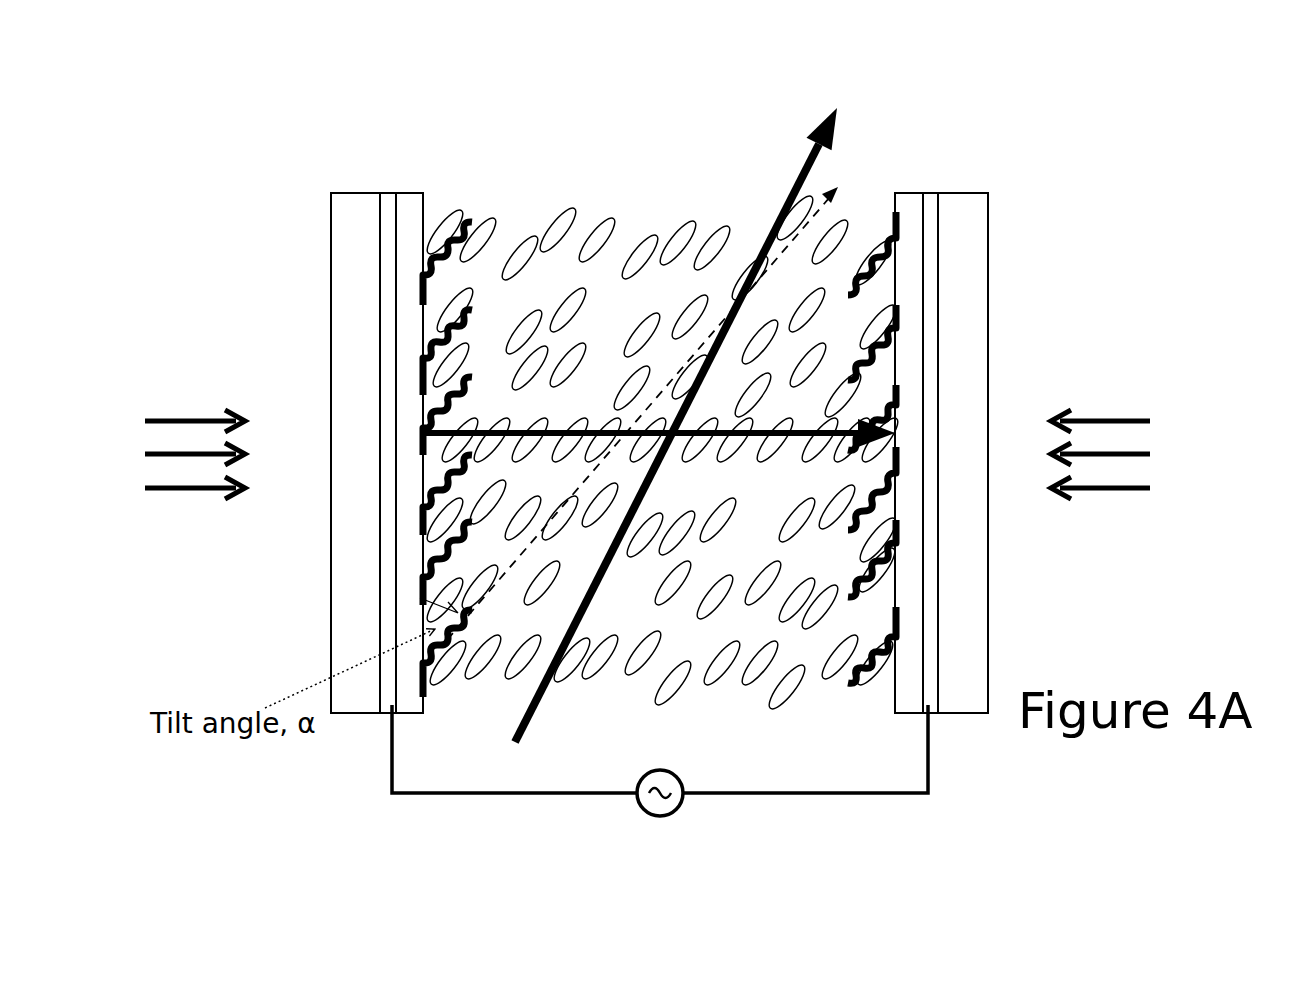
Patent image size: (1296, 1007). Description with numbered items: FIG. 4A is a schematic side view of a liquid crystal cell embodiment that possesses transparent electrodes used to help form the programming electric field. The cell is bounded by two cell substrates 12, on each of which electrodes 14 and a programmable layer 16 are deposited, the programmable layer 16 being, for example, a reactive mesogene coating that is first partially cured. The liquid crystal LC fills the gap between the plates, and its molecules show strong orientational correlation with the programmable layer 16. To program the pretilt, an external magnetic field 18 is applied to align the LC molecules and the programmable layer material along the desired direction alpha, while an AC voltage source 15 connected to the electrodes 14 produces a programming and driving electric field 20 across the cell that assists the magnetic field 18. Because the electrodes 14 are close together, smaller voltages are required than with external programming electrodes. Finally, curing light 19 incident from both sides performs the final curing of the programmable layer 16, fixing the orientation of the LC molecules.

The cell substrate 12 is at (356, 316).
The electrodes 14 is at (387, 190).
The AC voltage source 15 is at (660, 777).
The programmable layer 16 is at (888, 190).
The magnetic field 18 is at (765, 386).
The curing light 19 is at (647, 421).
The programming and driving electric field 20 is at (799, 426).
The liquid crystal molecules LC is at (720, 682).